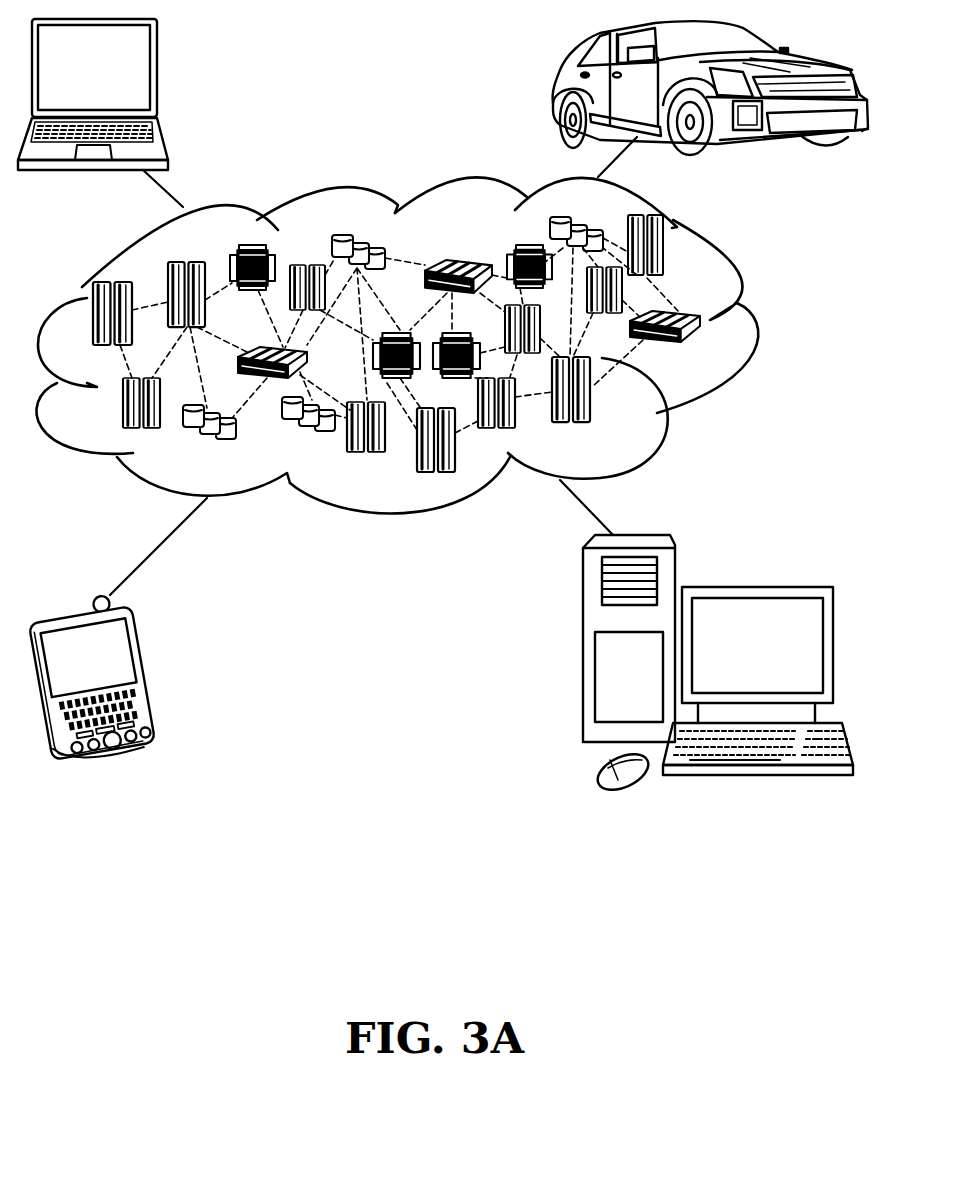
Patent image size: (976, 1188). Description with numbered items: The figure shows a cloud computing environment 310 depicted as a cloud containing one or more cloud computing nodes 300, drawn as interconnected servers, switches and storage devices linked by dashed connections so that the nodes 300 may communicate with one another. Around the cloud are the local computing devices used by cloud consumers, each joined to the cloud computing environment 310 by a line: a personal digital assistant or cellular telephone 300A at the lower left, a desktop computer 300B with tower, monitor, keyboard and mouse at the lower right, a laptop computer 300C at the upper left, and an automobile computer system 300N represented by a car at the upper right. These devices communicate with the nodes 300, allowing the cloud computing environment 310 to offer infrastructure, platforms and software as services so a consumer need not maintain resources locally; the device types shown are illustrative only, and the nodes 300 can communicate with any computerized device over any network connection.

The cloud computing nodes 300 is at (712, 356).
The cloud computing environment 310 is at (756, 326).
The personal digital assistant (PDA) or cellular telephone 300A is at (148, 674).
The desktop computer 300B is at (755, 587).
The laptop computer 300C is at (157, 73).
The automobile computer system 300N is at (557, 88).